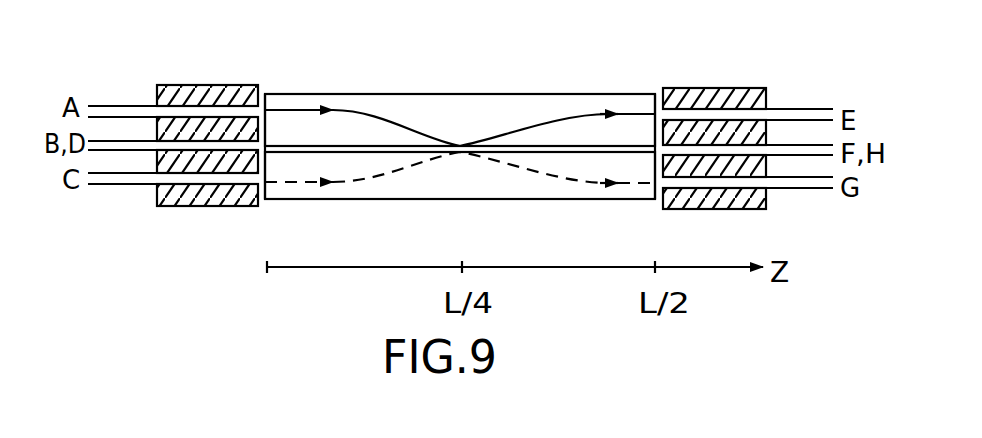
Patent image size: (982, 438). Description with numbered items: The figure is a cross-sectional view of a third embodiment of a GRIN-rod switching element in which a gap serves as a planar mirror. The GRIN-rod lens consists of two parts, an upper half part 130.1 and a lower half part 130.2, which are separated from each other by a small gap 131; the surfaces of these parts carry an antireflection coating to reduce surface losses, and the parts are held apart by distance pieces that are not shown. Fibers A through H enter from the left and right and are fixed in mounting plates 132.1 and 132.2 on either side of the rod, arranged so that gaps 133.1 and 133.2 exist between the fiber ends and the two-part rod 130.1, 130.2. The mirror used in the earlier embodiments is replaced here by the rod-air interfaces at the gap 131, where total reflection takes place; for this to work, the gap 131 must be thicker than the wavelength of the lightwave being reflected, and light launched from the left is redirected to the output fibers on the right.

The upper half part of GRIN-rod lens 130.1 is at (417, 108).
The lower half part of GRIN-rod lens 130.2 is at (495, 188).
The gap 131 is at (372, 148).
The mounting plate 132.1 is at (223, 102).
The mounting plate 132.2 is at (700, 90).
The gap 133.1 is at (261, 197).
The gap 133.2 is at (658, 202).